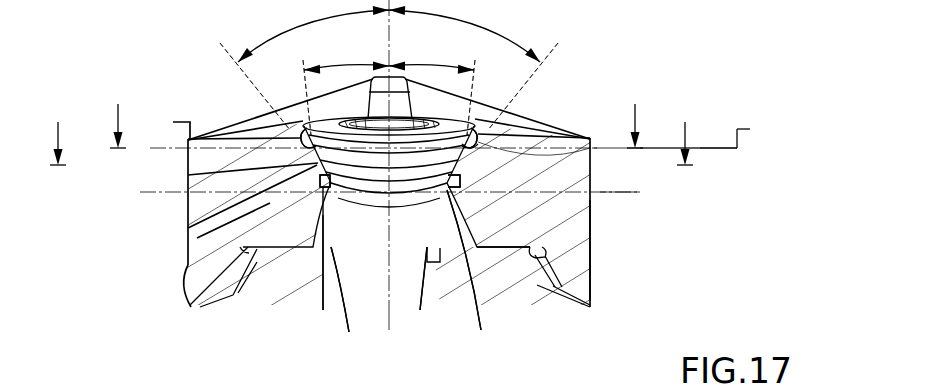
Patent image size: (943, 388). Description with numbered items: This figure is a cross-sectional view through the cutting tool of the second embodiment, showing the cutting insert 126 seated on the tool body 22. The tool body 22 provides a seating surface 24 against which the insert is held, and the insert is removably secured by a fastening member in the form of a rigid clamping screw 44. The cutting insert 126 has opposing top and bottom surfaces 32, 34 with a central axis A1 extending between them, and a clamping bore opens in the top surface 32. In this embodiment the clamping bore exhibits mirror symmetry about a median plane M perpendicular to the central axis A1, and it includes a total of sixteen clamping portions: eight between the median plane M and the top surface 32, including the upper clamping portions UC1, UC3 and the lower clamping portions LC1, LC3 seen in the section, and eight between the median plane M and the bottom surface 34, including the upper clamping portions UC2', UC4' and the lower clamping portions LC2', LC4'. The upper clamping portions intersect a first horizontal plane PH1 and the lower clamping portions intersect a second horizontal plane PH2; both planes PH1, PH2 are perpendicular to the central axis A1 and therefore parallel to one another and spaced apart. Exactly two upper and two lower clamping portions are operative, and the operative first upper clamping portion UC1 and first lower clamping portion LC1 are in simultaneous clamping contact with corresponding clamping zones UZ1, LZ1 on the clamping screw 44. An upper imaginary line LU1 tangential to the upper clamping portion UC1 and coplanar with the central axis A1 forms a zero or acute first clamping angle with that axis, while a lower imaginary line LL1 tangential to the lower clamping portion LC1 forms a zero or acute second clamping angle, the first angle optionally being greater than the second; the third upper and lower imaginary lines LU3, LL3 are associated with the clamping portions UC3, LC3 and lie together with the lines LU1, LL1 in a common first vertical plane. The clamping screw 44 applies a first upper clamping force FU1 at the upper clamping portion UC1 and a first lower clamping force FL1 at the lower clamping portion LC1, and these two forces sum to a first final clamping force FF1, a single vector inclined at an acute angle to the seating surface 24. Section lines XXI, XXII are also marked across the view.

The top surface 32 is at (505, 121).
The tool body 22 is at (268, 278).
The seating surface 24 is at (521, 246).
The bottom surface 34 is at (503, 248).
The clamping screw 44 is at (334, 292).
The cutting insert 126 is at (567, 245).
The central axis A1 is at (372, 320).
The median plane M is at (631, 190).
The first horizontal plane PH1 is at (749, 130).
The second horizontal plane PH2 is at (719, 164).
The first lower clamping force FL1 is at (318, 163).
The first upper clamping force FU1 is at (475, 145).
The first final clamping force FF1 is at (270, 203).
The lower clamping zone LZ1 is at (188, 228).
The upper clamping zone UZ1 is at (482, 143).
The first lower clamping portion LC1 is at (352, 188).
The third lower clamping portion LC3 is at (424, 188).
The second lower clamping portion LC2' is at (360, 245).
The fourth lower clamping portion LC4' is at (429, 301).
The first upper clamping portion UC1 is at (504, 130).
The third upper clamping portion UC3 is at (303, 132).
The second upper clamping portion UC2' is at (482, 272).
The fourth upper clamping portion UC4' is at (353, 307).
The first upper imaginary line LU1 is at (538, 75).
The third upper imaginary line LU3 is at (243, 74).
The first lower imaginary line LL1 is at (286, 97).
The third lower imaginary line LL3 is at (492, 97).
The section line XXI is at (142, 101).
The section line XXII is at (86, 120).